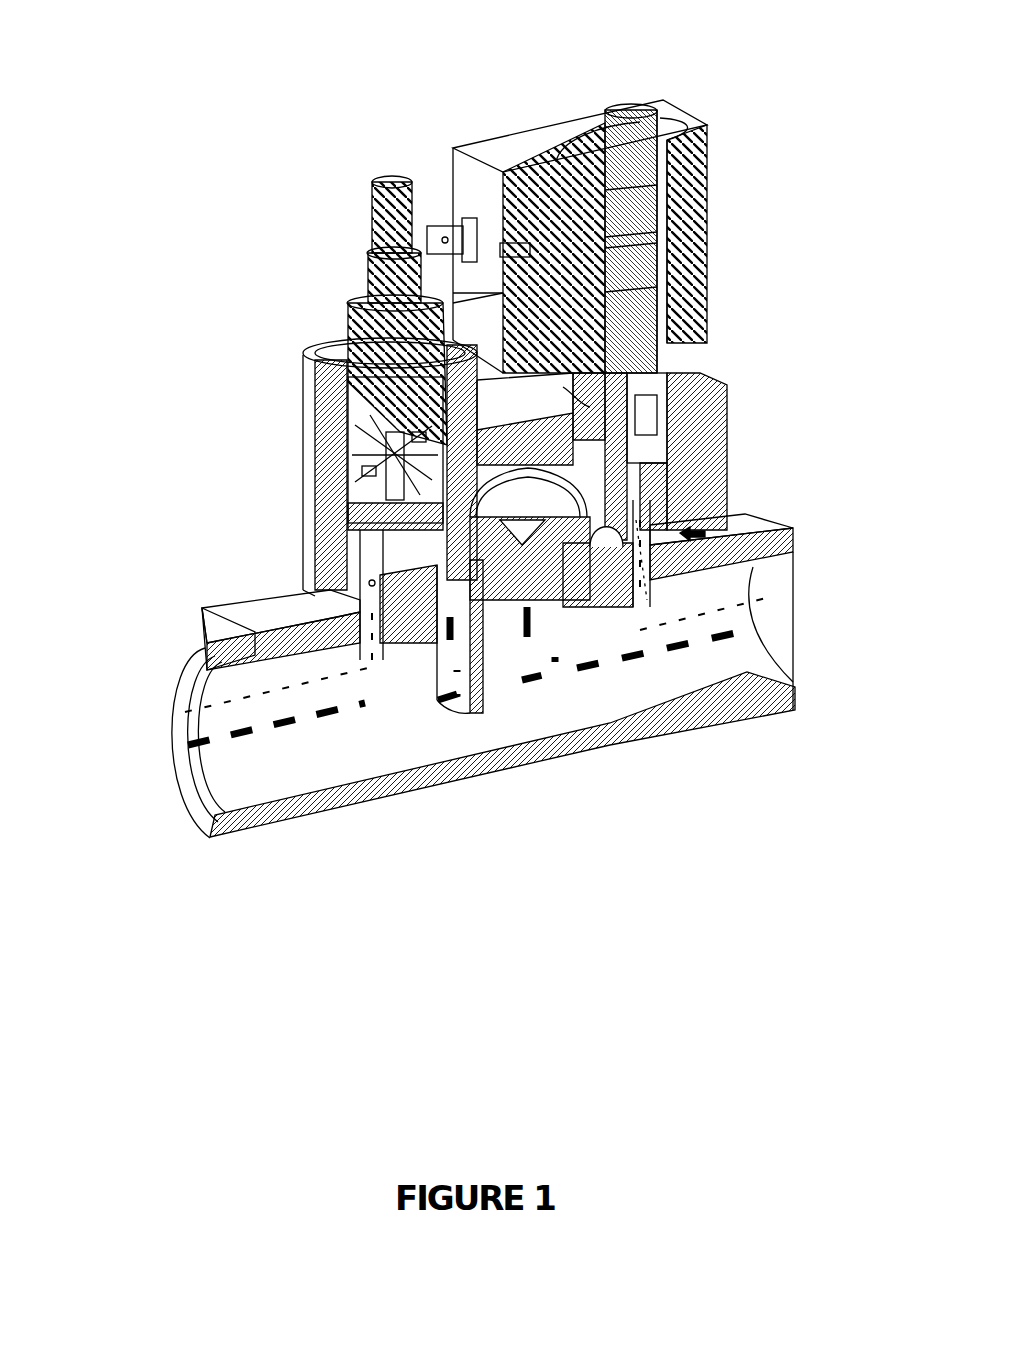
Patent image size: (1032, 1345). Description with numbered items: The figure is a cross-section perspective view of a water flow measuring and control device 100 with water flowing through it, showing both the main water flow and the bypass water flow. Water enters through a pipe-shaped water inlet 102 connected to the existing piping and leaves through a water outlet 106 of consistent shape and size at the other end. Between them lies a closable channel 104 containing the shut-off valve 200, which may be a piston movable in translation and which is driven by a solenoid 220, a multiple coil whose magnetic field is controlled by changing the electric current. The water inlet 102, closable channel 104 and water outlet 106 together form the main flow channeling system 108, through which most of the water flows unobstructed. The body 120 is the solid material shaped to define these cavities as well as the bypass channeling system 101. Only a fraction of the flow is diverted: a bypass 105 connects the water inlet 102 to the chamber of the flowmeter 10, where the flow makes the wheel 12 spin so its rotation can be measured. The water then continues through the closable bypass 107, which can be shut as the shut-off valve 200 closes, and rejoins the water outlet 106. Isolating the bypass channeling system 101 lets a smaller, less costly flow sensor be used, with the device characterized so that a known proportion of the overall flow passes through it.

The water flow measuring and control device 100 is at (417, 150).
The solenoid 220 is at (692, 256).
The flowmeter 10 is at (338, 490).
The wheel 12 is at (340, 443).
The shut-off valve 200 is at (817, 475).
The bypass channeling system 101 is at (350, 565).
The water inlet 102 is at (213, 782).
The closable channel 104 is at (450, 563).
The bypass 105 is at (367, 610).
The water outlet 106 is at (765, 750).
The closable bypass 107 is at (592, 515).
The main flow channeling system 108 is at (583, 673).
The body 120 is at (267, 613).